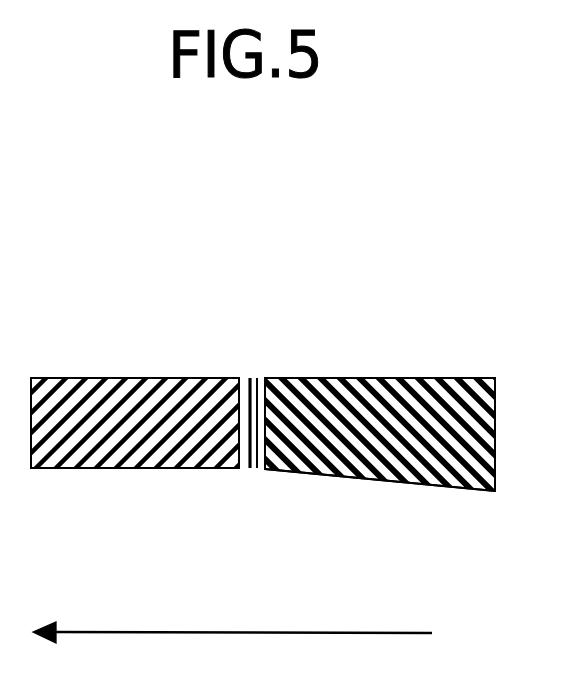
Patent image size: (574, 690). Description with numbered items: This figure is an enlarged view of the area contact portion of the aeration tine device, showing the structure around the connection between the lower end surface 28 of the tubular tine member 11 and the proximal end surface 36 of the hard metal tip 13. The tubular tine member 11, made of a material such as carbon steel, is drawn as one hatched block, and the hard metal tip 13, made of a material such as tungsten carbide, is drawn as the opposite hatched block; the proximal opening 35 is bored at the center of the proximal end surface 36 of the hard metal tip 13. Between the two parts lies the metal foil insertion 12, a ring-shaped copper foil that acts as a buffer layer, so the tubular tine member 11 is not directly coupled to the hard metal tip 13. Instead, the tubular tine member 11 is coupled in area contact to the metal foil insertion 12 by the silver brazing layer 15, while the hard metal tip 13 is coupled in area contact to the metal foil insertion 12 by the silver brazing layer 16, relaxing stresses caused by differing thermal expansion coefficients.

The tubular tine member 11 is at (78, 383).
The metal foil insertion 12 is at (258, 382).
The hard metal tip 13 is at (390, 403).
The silver brazing layer 15 is at (243, 382).
The silver brazing layer 16 is at (270, 400).
The lower end surface 28 is at (241, 462).
The proximal opening 35 is at (277, 472).
The proximal end surface 36 is at (261, 443).